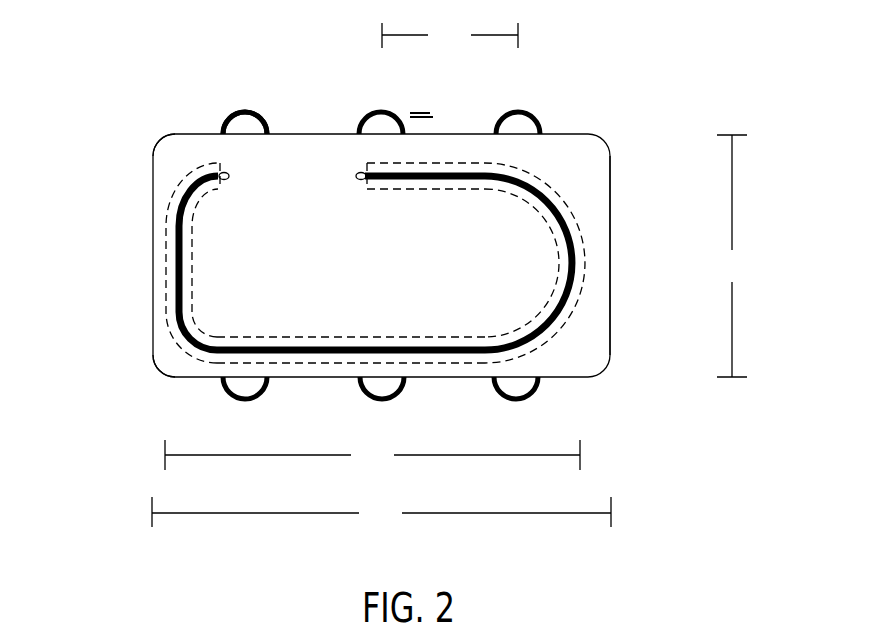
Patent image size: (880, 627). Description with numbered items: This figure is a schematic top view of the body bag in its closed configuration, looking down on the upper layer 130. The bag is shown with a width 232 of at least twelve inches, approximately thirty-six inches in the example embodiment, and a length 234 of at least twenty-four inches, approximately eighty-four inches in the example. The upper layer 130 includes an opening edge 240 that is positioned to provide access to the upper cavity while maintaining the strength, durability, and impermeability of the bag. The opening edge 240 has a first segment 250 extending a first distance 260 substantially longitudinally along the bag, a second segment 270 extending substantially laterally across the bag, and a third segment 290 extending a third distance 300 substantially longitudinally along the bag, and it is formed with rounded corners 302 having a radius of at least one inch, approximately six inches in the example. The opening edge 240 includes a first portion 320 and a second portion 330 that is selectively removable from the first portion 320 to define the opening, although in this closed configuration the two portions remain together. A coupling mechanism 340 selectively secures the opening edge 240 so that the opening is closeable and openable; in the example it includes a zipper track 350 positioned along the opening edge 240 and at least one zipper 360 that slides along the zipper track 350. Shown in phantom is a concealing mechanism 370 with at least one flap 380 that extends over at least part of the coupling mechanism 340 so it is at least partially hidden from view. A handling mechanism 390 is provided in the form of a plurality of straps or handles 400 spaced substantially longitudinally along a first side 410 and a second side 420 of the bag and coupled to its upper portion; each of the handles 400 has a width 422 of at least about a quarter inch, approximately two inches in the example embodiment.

The upper layer 130 is at (587, 160).
The width 232 is at (733, 256).
The length 234 is at (381, 513).
The opening edge 240 is at (465, 172).
The first segment 250 is at (455, 188).
The first distance 260 is at (450, 37).
The second segment 270 is at (553, 266).
The third segment 290 is at (402, 340).
The third distance 300 is at (372, 455).
The rounded corners 302 is at (167, 190).
The first portion 320 is at (582, 202).
The second portion 330 is at (498, 322).
The coupling mechanism 340 is at (288, 368).
The zipper track 350 is at (259, 350).
The zipper 360 is at (218, 193).
The concealing mechanism 370 is at (200, 165).
The flap 380 is at (170, 245).
The handling mechanism 390 is at (248, 102).
The handles 400 is at (365, 118).
The first side 410 is at (177, 100).
The second side 420 is at (187, 385).
The width 422 is at (422, 112).